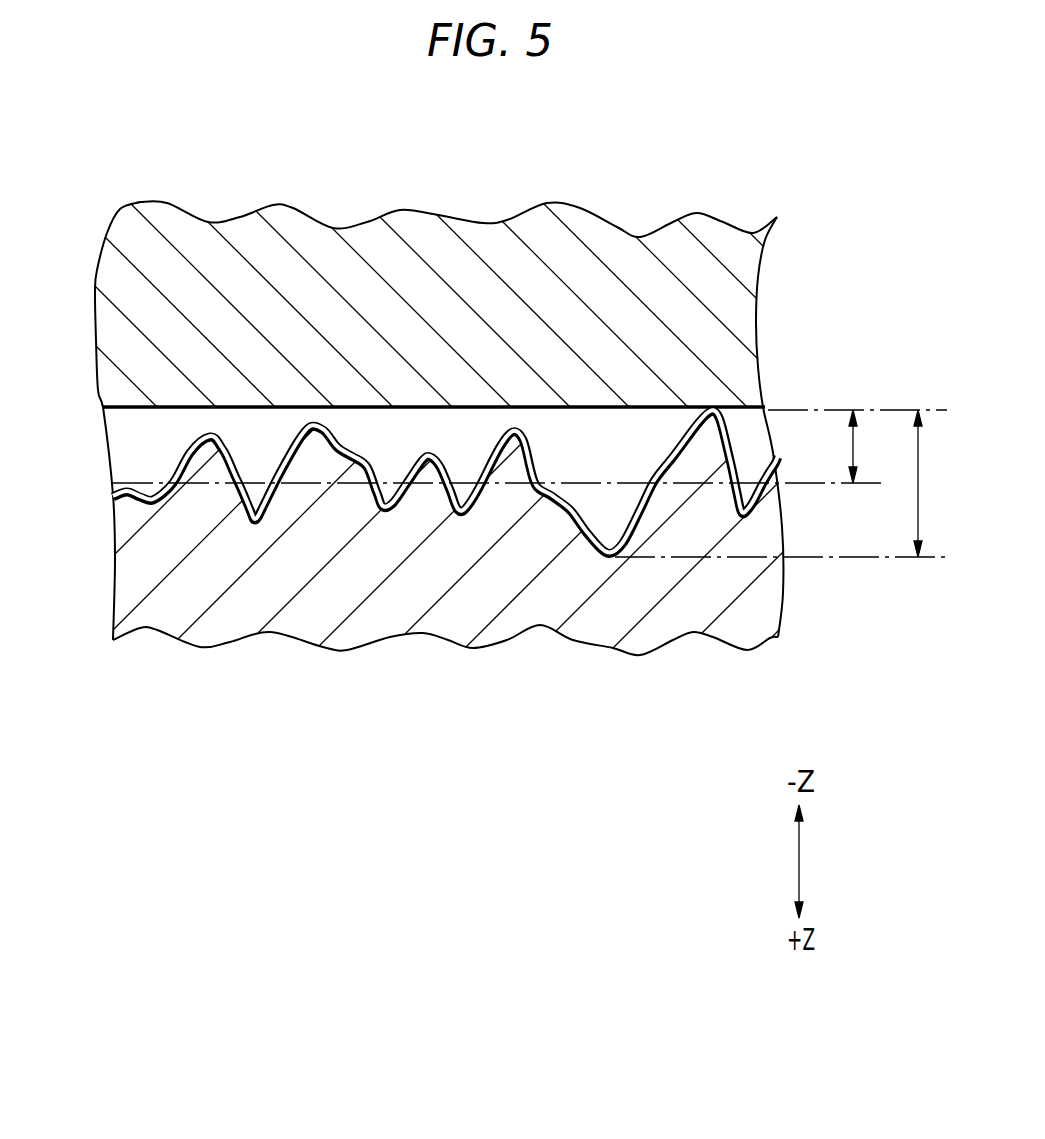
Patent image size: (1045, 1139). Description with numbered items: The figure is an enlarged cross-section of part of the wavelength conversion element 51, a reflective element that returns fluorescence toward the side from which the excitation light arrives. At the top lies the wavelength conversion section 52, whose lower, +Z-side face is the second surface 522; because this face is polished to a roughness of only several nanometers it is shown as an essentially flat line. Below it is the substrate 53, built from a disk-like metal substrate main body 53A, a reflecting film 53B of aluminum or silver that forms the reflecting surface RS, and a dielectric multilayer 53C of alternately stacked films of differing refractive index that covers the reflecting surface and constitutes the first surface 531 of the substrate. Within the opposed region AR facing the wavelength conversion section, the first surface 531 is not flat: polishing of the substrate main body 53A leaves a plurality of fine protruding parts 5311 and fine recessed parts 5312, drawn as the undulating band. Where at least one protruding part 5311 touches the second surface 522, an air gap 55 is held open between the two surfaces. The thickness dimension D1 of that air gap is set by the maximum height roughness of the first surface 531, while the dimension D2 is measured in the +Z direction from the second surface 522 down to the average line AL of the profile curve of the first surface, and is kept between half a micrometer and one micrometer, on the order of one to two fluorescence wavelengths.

The wavelength conversion element 51 is at (790, 178).
The wavelength conversion section 52 is at (733, 288).
The second surface 522 is at (436, 404).
The substrate 53 is at (735, 615).
The first surface 531 is at (743, 441).
The protruding parts 5311 is at (263, 440).
The recessed parts 5312 is at (140, 505).
The substrate main body 53A is at (127, 562).
The reflecting film 53B is at (193, 460).
The dielectric multilayer 53C is at (113, 500).
The air gap 55 is at (145, 437).
The average line AL is at (783, 477).
The opposed region AR is at (678, 620).
The thickness dimension D1 is at (934, 483).
The dimension D2 is at (869, 446).